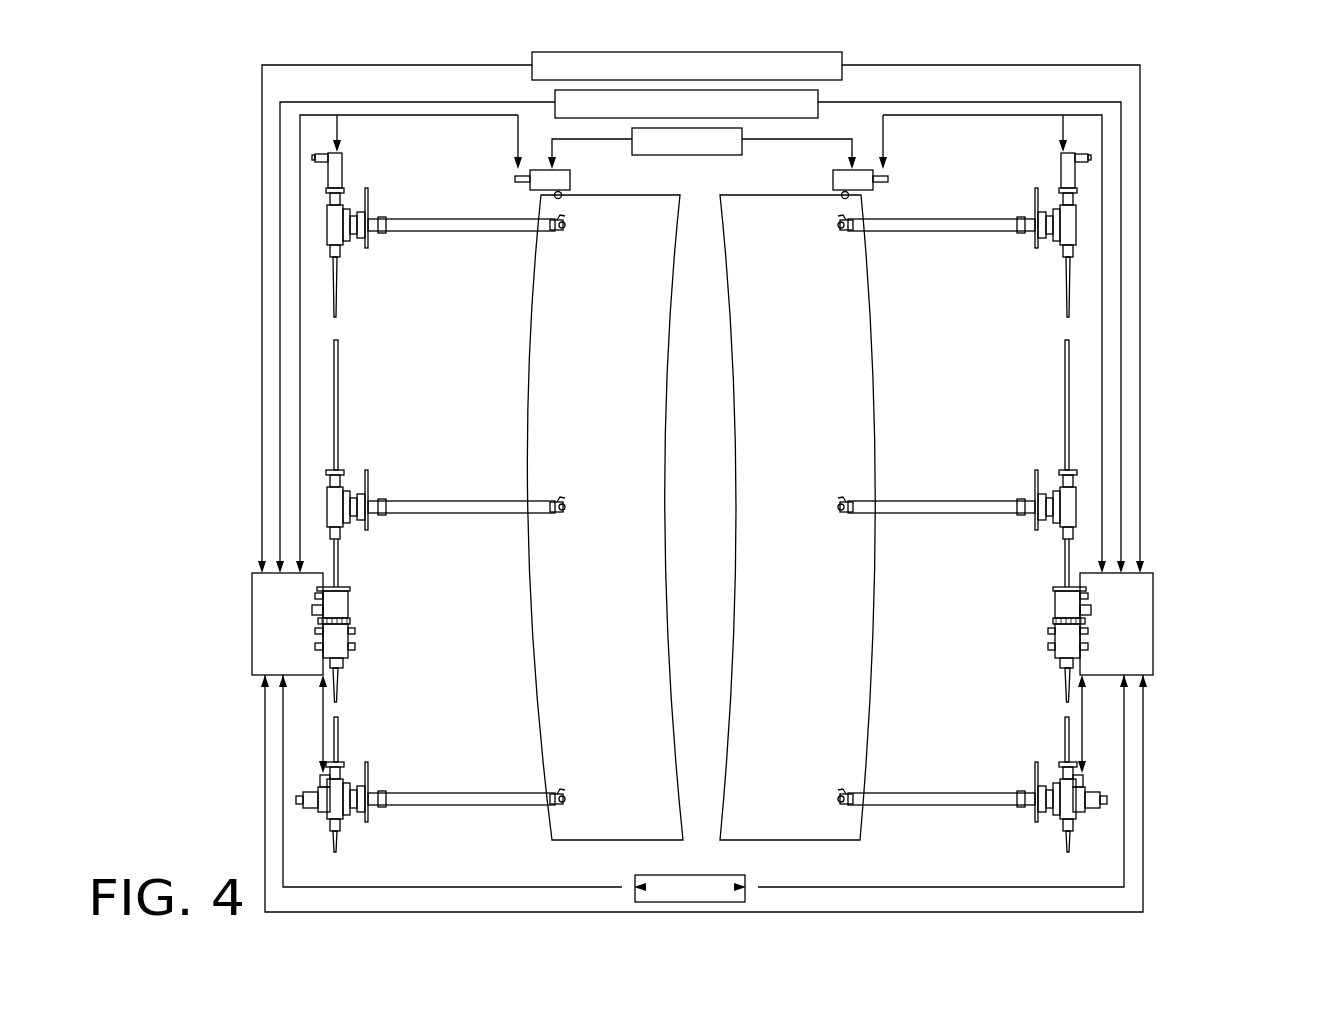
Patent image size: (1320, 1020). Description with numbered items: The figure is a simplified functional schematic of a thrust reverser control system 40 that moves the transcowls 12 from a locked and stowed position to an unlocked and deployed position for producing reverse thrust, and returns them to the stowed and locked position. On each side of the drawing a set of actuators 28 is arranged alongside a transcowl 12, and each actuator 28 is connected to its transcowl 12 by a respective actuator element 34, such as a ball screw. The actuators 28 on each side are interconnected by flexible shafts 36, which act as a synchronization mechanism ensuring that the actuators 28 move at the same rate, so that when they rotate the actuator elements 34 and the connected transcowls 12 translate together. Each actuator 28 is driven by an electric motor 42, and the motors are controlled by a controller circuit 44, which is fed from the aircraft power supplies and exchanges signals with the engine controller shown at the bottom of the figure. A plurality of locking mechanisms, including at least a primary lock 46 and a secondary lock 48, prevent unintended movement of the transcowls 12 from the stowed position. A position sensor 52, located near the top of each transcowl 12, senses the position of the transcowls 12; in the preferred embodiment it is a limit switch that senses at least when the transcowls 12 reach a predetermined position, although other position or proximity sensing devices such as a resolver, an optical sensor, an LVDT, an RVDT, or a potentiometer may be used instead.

The control system 40 is at (1224, 86).
The transcowl 12 is at (595, 306).
The actuator 28 is at (345, 248).
The actuator element 34 is at (445, 232).
The flexible shaft 36 is at (338, 392).
The electric motor 42 is at (355, 645).
The controller circuit 44 is at (266, 633).
The primary lock 46 is at (352, 597).
The secondary lock 48 is at (310, 808).
The position sensor 52 is at (572, 178).